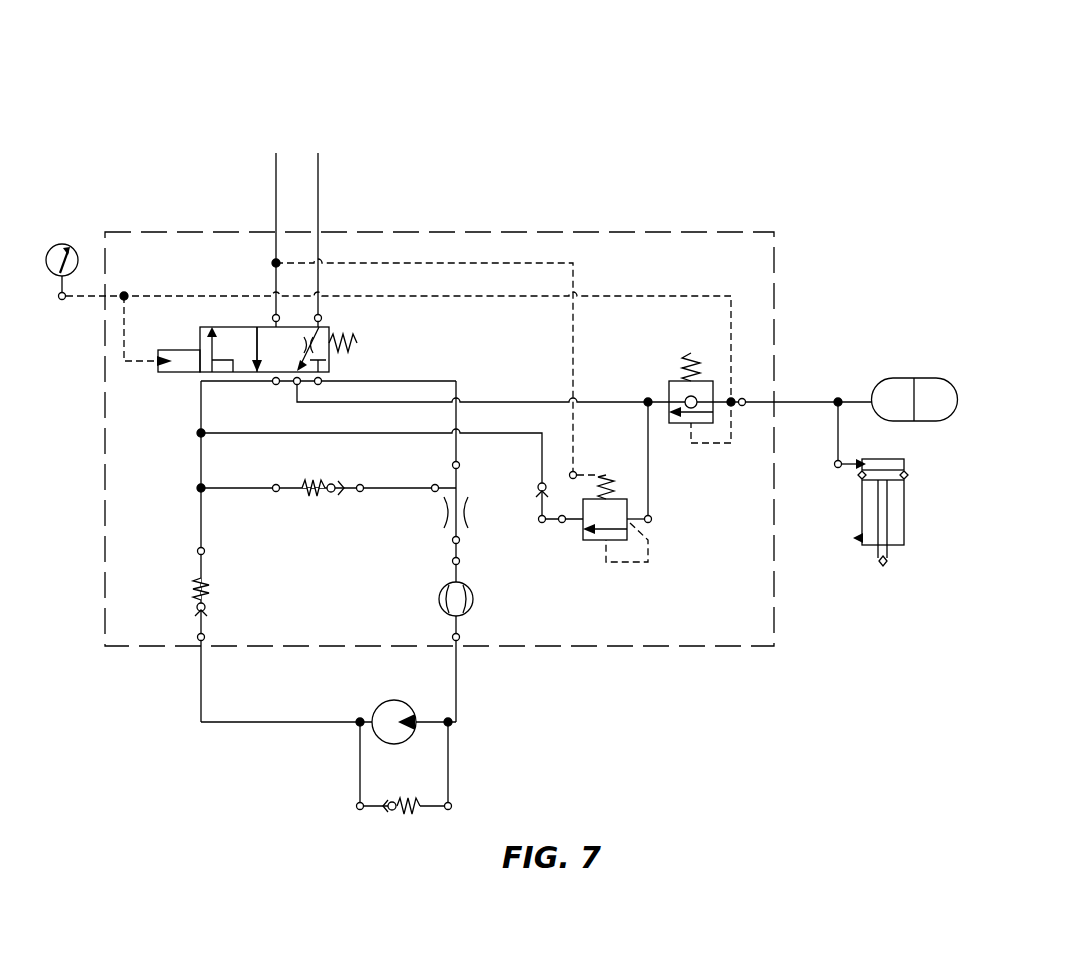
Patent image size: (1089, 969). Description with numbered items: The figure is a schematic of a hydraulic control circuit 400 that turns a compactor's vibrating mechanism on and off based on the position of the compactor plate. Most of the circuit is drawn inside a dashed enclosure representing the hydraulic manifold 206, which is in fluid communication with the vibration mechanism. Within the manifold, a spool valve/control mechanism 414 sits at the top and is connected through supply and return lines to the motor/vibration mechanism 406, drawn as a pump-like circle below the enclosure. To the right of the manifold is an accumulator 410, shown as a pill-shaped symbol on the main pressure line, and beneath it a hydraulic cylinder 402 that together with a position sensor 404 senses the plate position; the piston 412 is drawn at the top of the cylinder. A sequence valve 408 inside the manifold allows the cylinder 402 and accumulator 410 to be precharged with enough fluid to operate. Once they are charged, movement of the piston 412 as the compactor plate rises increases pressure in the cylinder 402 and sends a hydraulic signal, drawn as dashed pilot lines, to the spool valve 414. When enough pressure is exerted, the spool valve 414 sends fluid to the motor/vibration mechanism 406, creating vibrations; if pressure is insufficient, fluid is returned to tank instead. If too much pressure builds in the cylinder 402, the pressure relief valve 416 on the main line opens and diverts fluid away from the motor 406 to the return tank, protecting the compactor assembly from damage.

The hydraulic control circuit 400 is at (716, 80).
The hydraulic manifold 206 is at (713, 230).
The spool valve/control mechanism 414 is at (211, 310).
The pressure relief valve 416 is at (712, 366).
The accumulator 410 is at (900, 378).
The piston 412 is at (895, 472).
The hydraulic cylinder 402 is at (957, 513).
The position sensor 404 is at (912, 497).
The sequence valve 408 is at (657, 530).
The motor/vibration mechanism 406 is at (435, 700).